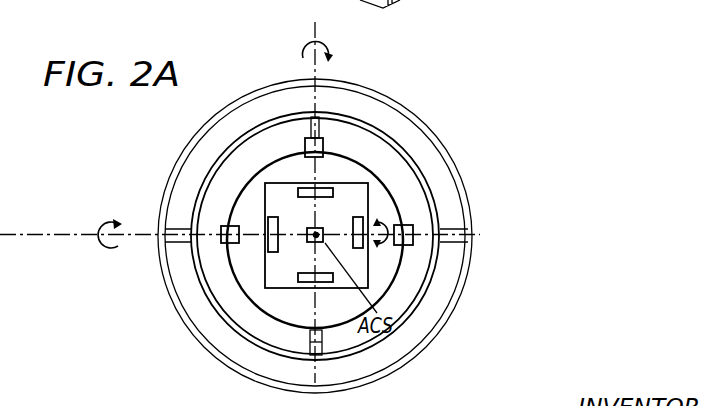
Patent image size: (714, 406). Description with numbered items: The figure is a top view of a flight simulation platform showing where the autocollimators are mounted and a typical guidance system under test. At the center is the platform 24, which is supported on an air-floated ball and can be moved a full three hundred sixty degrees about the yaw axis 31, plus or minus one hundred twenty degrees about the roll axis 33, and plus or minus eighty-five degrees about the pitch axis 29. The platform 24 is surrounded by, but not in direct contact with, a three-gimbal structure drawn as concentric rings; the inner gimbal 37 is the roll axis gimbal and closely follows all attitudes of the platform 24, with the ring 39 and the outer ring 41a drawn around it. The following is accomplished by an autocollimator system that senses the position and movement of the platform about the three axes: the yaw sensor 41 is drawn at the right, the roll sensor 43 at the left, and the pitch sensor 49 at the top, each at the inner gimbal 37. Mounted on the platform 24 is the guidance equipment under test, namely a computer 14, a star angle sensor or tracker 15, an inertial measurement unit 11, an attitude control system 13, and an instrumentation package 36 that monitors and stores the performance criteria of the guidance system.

The outer gimbal ring 41a is at (256, 92).
The intermediate gimbal ring 39 is at (422, 175).
The inner gimbal 37 is at (302, 313).
The platform 24 is at (270, 178).
The pitch sensor 49 is at (323, 153).
The yaw sensor 41 is at (404, 246).
The roll sensor 43 is at (227, 243).
The computer 14 is at (140, 182).
The instrumentation package 36 is at (360, 249).
The inertial measurement unit 11 is at (328, 183).
The star angle sensor or tracker 15 is at (338, 214).
The attitude control system 13 is at (326, 282).
The roll axis 33 is at (311, 32).
The pitch axis 29 is at (66, 237).
The yaw axis 31 is at (360, 243).